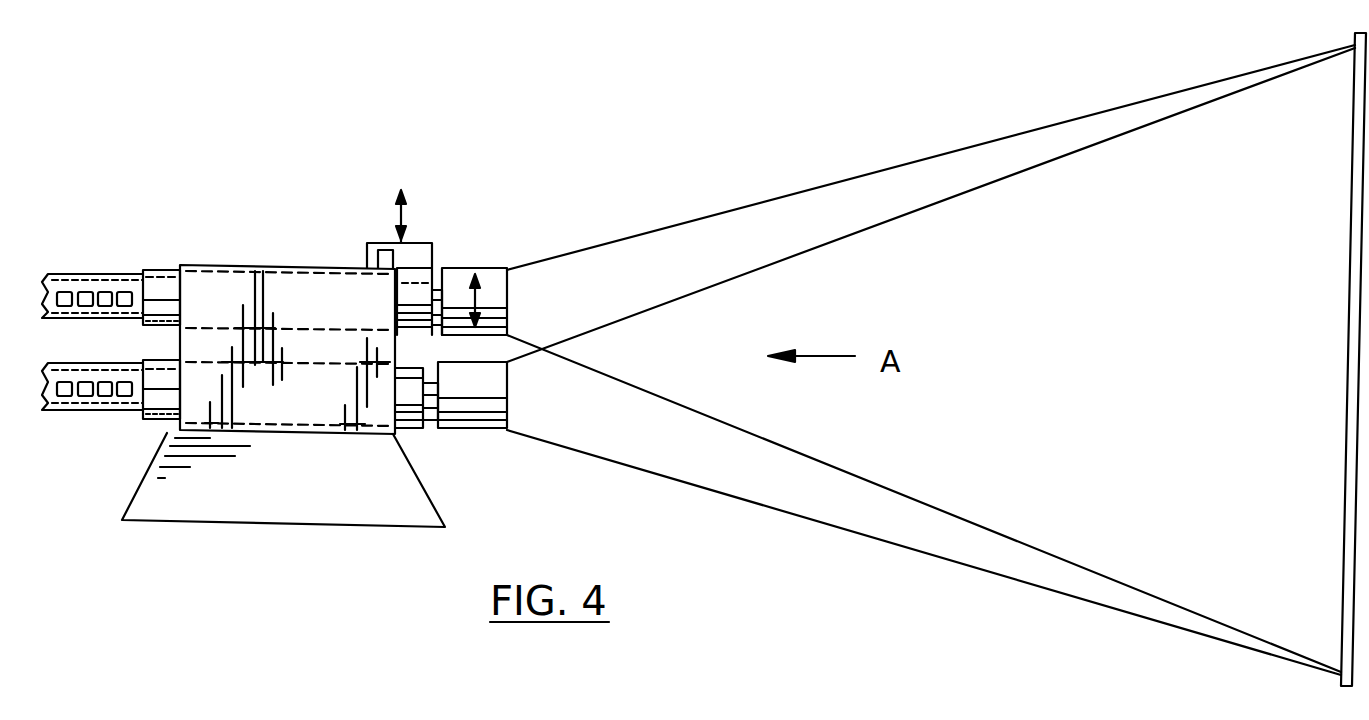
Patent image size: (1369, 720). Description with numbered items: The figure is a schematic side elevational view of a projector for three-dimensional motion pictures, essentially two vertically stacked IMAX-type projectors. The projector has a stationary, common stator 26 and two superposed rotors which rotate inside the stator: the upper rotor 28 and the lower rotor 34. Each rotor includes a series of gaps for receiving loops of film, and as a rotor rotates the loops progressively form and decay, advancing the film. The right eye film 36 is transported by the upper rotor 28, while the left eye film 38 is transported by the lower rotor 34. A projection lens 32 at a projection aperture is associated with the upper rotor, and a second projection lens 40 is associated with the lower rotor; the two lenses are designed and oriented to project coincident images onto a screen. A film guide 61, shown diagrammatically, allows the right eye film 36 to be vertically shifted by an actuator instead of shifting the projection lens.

The stator 26 is at (249, 266).
The rotor 28 is at (163, 268).
The projection lens 32 is at (493, 268).
The lower rotor 34 is at (152, 420).
The right eye film 36 is at (309, 292).
The left eye film 38 is at (303, 403).
The projection lens 40 is at (490, 382).
The film guide 61 is at (421, 246).